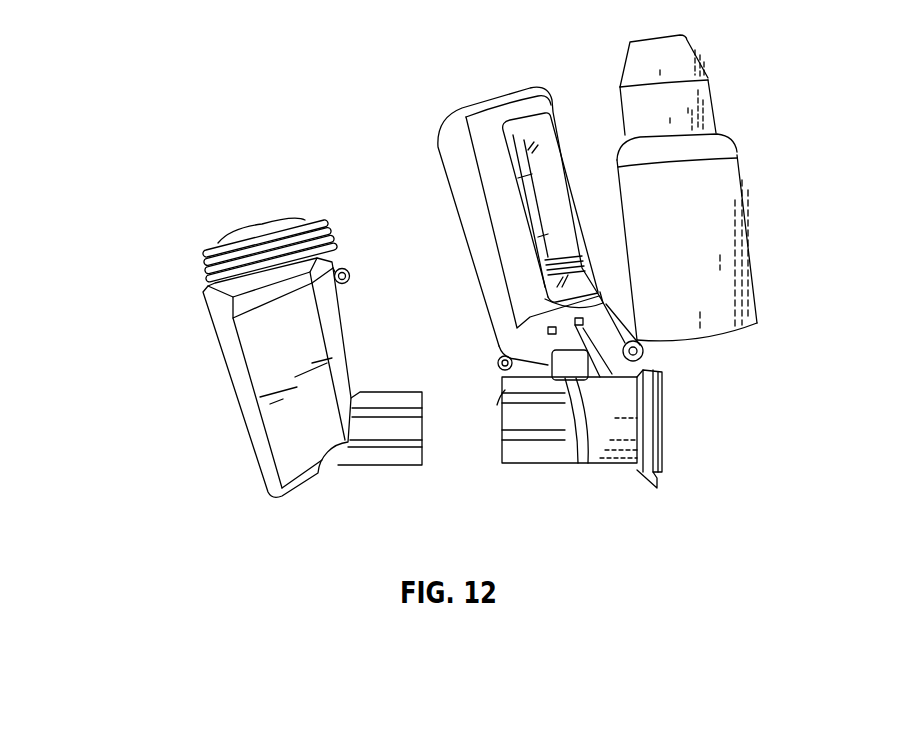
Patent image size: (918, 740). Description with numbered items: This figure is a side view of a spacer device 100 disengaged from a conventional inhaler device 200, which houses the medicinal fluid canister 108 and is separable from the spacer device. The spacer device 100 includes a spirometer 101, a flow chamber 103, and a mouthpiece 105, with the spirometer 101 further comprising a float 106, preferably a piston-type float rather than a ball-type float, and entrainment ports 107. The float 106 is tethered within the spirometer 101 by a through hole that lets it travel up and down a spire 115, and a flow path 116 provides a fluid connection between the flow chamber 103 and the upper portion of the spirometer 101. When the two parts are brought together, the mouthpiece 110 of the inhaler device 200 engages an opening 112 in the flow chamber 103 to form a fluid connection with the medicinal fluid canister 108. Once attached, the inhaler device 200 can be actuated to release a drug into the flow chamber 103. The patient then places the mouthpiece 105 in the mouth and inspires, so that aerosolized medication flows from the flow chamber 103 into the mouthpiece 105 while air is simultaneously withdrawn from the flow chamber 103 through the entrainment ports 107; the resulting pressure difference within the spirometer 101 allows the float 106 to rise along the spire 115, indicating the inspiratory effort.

The spacer device 100 is at (133, 22).
The spirometer 101 is at (523, 143).
The flow chamber 103 is at (560, 417).
The mouthpiece 105 is at (692, 116).
The float 106 is at (597, 277).
The entrainment ports 107 is at (527, 330).
The medicinal fluid canister 108 is at (265, 216).
The mouthpiece of the inhaler device 110 is at (372, 456).
The opening 112 is at (497, 415).
The spire 115 is at (527, 180).
The flow path 116 is at (462, 172).
The inhaler device 200 is at (240, 399).